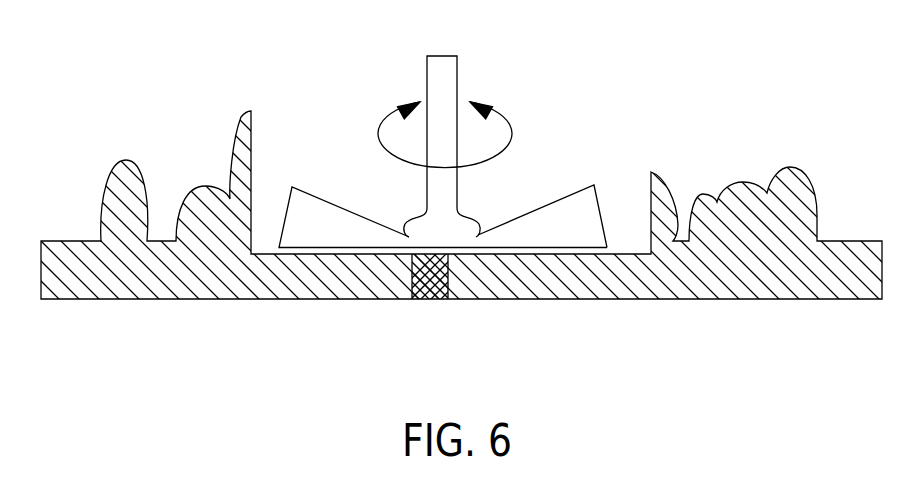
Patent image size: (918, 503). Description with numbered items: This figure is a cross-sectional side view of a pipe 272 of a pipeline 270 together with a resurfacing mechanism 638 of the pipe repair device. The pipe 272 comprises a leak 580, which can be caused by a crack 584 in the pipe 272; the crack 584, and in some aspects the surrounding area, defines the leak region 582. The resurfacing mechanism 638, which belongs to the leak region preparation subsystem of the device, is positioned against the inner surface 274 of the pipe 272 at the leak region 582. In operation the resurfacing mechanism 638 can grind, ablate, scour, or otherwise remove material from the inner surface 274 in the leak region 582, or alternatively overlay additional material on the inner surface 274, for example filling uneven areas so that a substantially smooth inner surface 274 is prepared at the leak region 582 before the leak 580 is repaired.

The pipeline 270 is at (183, 300).
The pipe 272 is at (607, 300).
The inner surface 274 is at (258, 251).
The leak region 582 is at (635, 253).
The leak 580 is at (432, 300).
The crack 584 is at (412, 287).
The resurfacing mechanism 638 is at (448, 67).